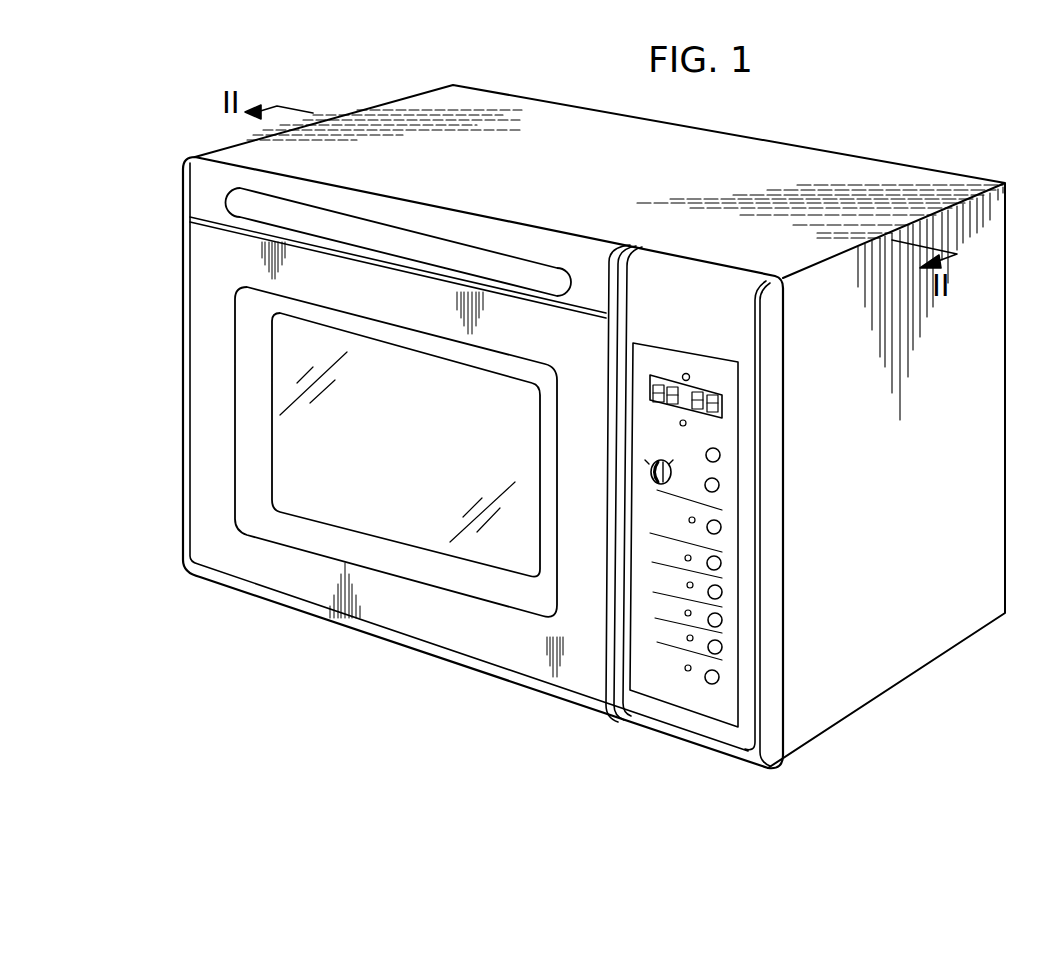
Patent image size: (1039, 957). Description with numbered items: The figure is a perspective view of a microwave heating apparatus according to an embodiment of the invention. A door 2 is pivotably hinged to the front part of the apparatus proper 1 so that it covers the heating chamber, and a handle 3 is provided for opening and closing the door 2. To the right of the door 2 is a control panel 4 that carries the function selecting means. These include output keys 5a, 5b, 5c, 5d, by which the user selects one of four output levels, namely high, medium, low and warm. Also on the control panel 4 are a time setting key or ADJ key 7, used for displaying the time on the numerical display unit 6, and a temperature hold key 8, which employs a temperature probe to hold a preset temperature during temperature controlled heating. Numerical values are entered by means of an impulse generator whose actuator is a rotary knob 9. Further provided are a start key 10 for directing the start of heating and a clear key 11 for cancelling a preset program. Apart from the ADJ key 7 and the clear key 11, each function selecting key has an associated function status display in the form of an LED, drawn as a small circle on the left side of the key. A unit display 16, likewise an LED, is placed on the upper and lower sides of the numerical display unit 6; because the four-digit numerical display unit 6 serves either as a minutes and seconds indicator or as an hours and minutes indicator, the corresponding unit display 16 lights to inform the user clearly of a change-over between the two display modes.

The apparatus proper 1 is at (935, 650).
The door 2 is at (190, 535).
The handle 3 is at (250, 204).
The control panel 4 is at (665, 698).
The output key 5a is at (721, 563).
The output key 5b is at (722, 592).
The output key 5c is at (722, 620).
The output key 5d is at (722, 647).
The numerical display unit 6 is at (722, 400).
The ADJ key 7 is at (720, 455).
The temperature hold key 8 is at (721, 527).
The rotary knob 9 is at (651, 472).
The start key 10 is at (717, 682).
The clear key 11 is at (719, 485).
The unit display 16 is at (687, 372).